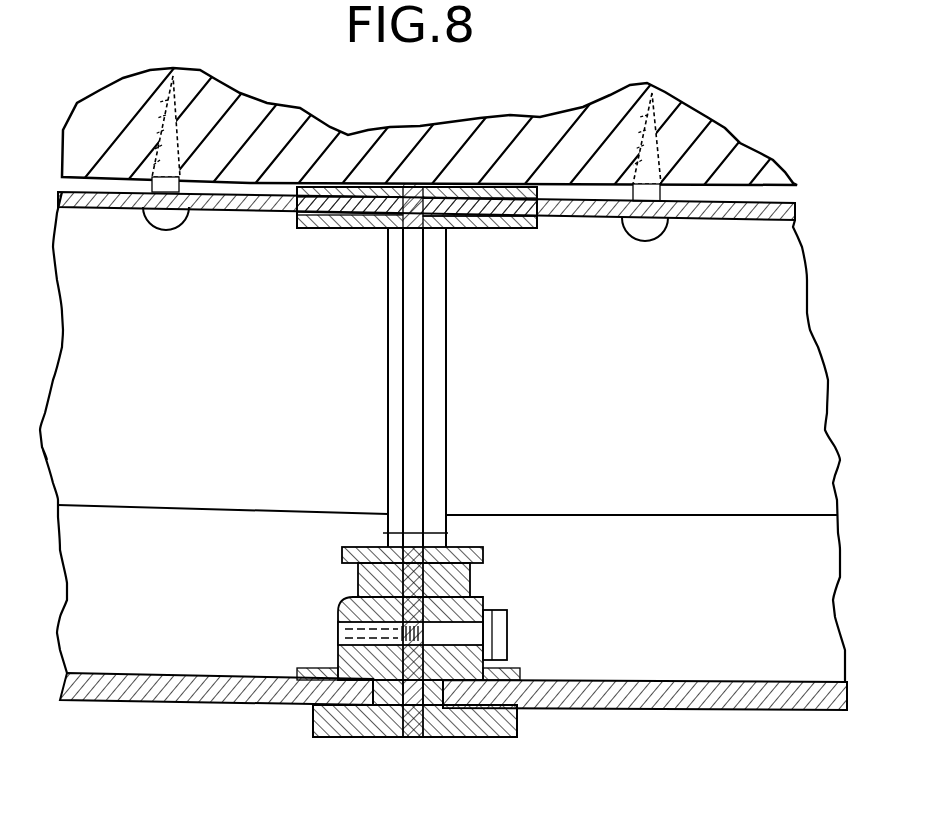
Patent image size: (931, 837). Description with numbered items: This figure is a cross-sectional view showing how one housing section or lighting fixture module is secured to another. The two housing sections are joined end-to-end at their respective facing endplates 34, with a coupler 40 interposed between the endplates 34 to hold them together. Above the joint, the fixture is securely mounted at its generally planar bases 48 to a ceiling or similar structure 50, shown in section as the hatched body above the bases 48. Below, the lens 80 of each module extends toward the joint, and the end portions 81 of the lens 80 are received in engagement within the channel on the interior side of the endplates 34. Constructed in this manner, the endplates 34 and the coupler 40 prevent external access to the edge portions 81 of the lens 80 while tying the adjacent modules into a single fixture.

The endplate 34 is at (388, 289).
The coupler 40 is at (428, 397).
The base 48 is at (231, 207).
The ceiling or similar structure 50 is at (362, 150).
The lens 80 is at (143, 702).
The end portion of lens 81 is at (334, 738).